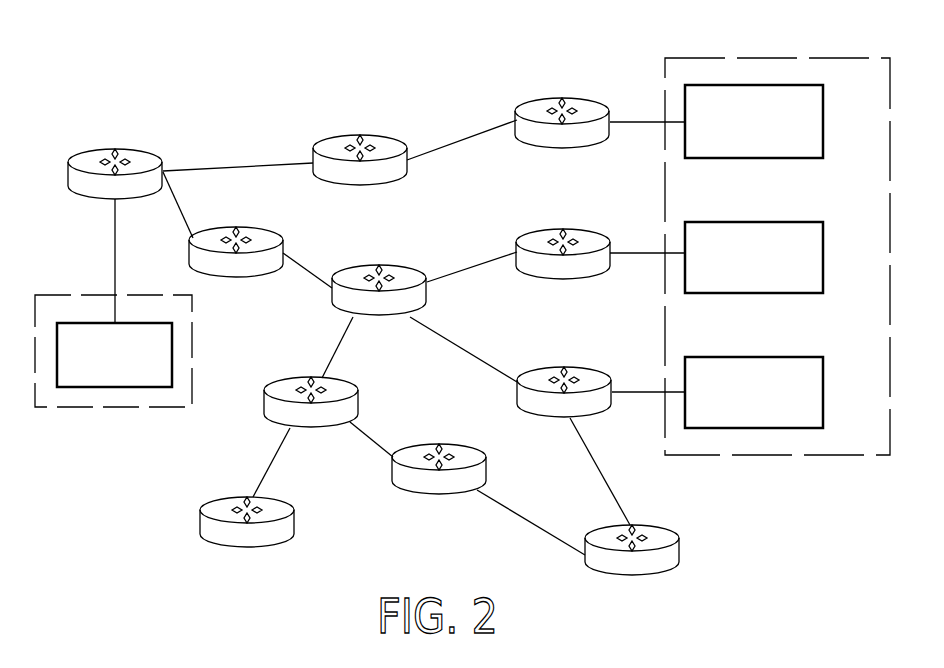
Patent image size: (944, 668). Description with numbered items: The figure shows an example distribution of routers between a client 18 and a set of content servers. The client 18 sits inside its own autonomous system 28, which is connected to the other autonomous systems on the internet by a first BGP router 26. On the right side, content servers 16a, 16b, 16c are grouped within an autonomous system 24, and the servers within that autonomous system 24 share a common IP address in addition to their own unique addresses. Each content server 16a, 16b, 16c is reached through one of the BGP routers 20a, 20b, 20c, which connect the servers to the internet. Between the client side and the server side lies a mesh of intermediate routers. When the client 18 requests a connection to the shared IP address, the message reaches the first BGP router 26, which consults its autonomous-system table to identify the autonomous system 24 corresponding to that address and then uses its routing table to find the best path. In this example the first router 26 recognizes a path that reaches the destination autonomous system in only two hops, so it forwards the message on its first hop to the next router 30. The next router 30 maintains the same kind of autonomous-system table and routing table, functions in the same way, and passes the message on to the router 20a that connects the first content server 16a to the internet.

The first content server 16a is at (823, 118).
The second content server 16b is at (823, 258).
The third content server 16c is at (823, 393).
The client 18 is at (172, 353).
The first BGP router 20a is at (527, 104).
The second BGP router 20b is at (597, 220).
The third BGP router 20c is at (545, 367).
The autonomous system 24 is at (695, 58).
The first BGP router 26 is at (136, 148).
The client's autonomous system 28 is at (133, 407).
The next router 30 is at (343, 134).